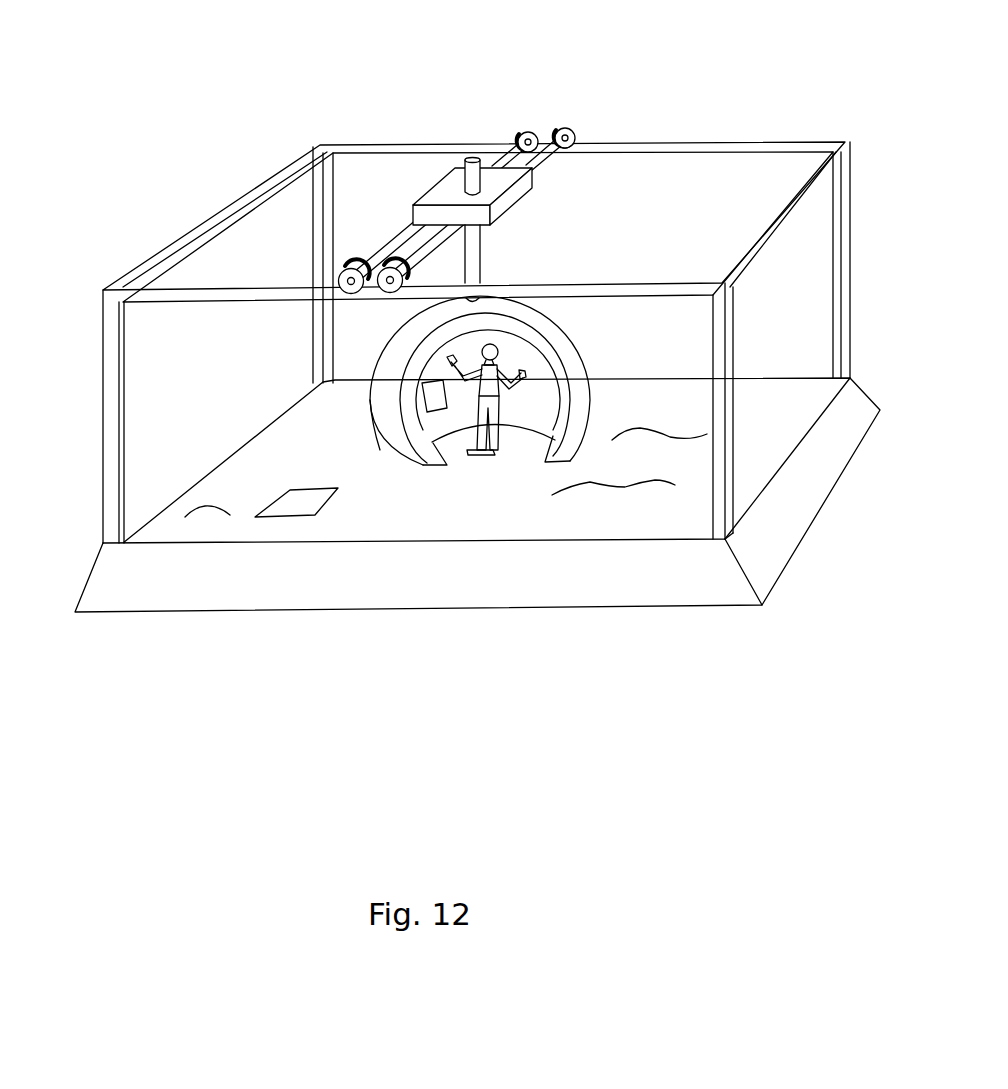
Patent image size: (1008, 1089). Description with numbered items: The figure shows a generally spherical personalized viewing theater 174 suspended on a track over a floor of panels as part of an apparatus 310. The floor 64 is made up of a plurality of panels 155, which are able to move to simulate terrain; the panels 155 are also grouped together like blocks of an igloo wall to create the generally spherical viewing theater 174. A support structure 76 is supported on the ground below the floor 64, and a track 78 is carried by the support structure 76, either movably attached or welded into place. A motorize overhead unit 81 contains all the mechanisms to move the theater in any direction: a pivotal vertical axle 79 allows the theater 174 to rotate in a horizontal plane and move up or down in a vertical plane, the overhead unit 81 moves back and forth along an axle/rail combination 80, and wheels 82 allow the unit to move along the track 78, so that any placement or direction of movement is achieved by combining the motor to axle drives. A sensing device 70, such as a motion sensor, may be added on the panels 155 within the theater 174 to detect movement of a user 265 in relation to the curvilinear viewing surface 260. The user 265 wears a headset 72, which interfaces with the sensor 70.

The apparatus 310 is at (232, 142).
The track 78 is at (638, 140).
The motorize overhead unit 81 is at (425, 200).
The pivotal vertical axle 79 is at (465, 163).
The axle/rail combination 80 is at (517, 147).
The wheels 82 is at (570, 130).
The headset 72 is at (497, 345).
The sensing device 70 is at (450, 362).
The support structure 76 is at (735, 470).
The floor 64 is at (640, 490).
The curvilinear viewing surface 260 is at (540, 390).
The user 265 is at (483, 460).
The panels 155 is at (255, 517).
The generally spherical personalized viewing theater 174 is at (380, 450).